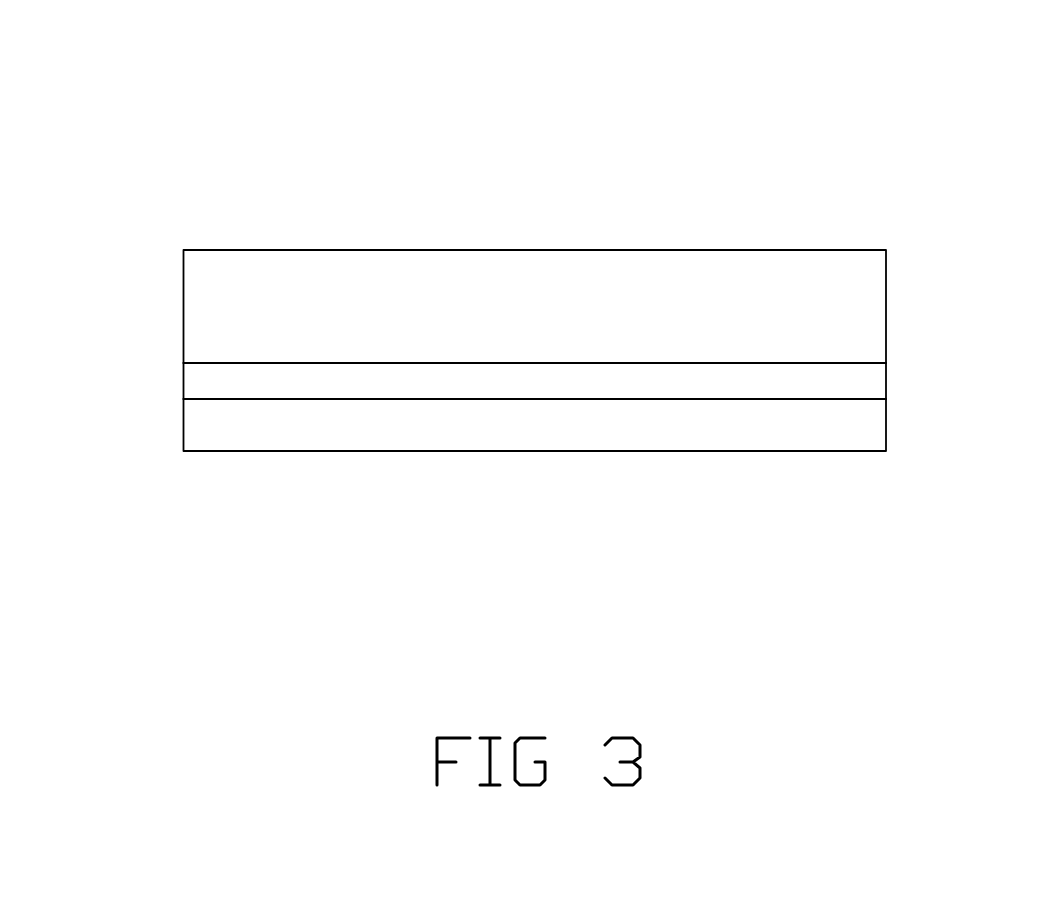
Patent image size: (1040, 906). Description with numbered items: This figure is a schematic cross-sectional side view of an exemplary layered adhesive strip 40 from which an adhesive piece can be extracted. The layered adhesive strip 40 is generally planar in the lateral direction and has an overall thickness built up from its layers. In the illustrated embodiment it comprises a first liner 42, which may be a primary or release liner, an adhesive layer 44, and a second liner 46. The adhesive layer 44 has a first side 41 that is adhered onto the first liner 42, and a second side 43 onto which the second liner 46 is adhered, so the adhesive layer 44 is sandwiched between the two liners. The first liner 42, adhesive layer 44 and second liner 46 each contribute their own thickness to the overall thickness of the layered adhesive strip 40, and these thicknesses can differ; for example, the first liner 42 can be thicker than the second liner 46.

The layered adhesive strip 40 is at (596, 298).
The first side 41 is at (295, 363).
The first liner 42 is at (854, 311).
The second side 43 is at (289, 399).
The adhesive layer 44 is at (866, 387).
The second liner 46 is at (866, 435).